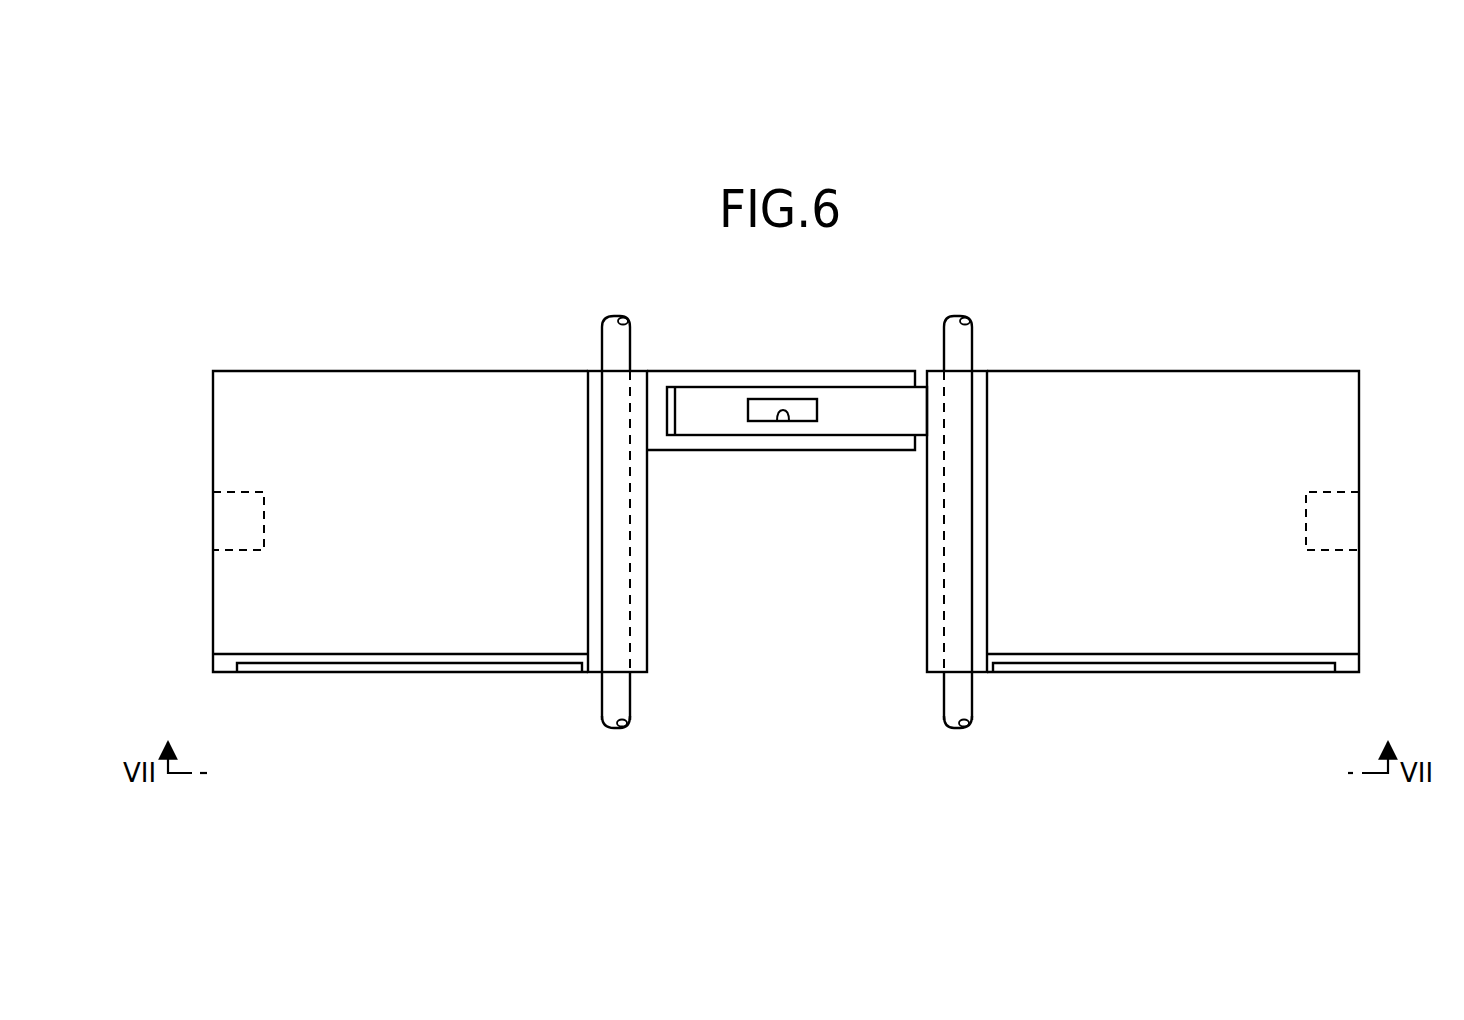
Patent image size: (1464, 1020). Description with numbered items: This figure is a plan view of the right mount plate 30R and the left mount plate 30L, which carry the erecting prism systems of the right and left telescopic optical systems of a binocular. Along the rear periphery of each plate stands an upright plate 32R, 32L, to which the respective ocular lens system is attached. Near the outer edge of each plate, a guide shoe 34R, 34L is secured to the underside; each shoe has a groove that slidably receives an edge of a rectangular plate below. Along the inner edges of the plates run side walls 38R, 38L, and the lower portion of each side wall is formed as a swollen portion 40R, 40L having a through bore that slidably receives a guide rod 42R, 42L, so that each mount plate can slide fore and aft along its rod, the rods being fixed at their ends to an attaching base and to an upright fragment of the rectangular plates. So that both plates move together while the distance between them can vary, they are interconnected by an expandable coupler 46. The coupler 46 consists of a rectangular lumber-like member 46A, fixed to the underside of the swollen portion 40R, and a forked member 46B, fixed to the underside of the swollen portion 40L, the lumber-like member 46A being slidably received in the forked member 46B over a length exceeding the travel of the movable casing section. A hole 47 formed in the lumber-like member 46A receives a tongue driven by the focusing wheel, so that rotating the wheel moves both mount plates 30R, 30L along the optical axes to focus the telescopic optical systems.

The left mount plate 30L is at (425, 533).
The right mount plate 30R is at (1153, 533).
The upright plate 32L is at (408, 660).
The upright plate 32R is at (1175, 660).
The guide shoe 34L is at (228, 527).
The guide shoe 34R is at (1340, 520).
The side wall 38L is at (583, 456).
The side wall 38R is at (992, 456).
The swollen portion 40L is at (640, 578).
The swollen portion 40R is at (933, 582).
The guide rod 42L is at (620, 702).
The guide rod 42R is at (955, 703).
The expandable coupler 46 is at (787, 401).
The lumber-like member 46A is at (877, 427).
The forked member 46B is at (707, 442).
The hole 47 is at (778, 421).